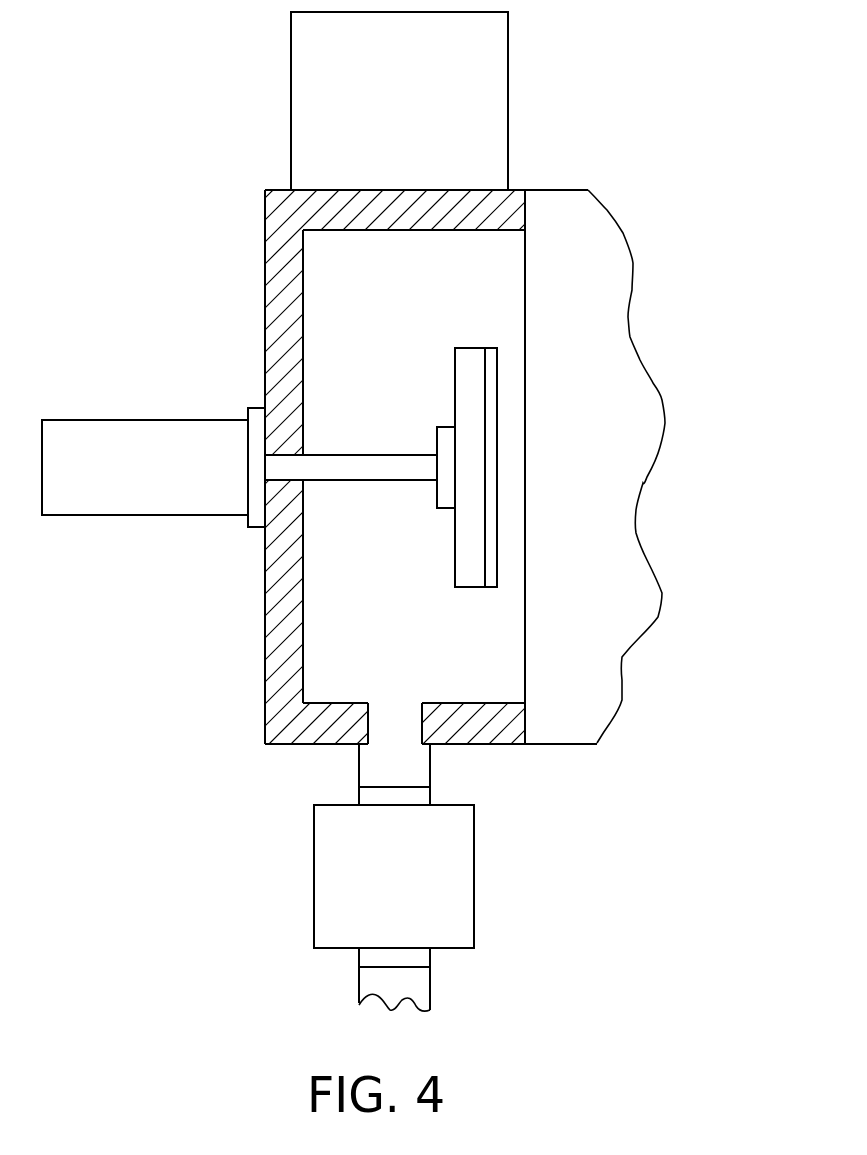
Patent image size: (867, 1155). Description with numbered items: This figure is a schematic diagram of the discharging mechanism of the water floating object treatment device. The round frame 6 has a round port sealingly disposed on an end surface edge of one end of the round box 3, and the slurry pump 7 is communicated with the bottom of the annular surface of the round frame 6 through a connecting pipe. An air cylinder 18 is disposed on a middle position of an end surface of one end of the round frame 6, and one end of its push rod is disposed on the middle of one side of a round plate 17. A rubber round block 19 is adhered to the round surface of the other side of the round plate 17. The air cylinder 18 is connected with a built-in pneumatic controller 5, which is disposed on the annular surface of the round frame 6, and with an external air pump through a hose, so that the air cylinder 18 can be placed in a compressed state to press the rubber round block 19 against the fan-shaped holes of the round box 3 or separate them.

The round box 3 is at (608, 435).
The pneumatic controller 5 is at (472, 132).
The round frame 6 is at (280, 285).
The slurry pump 7 is at (448, 853).
The round plate 17 is at (477, 368).
The air cylinder 18 is at (147, 483).
The rubber round block 19 is at (493, 552).